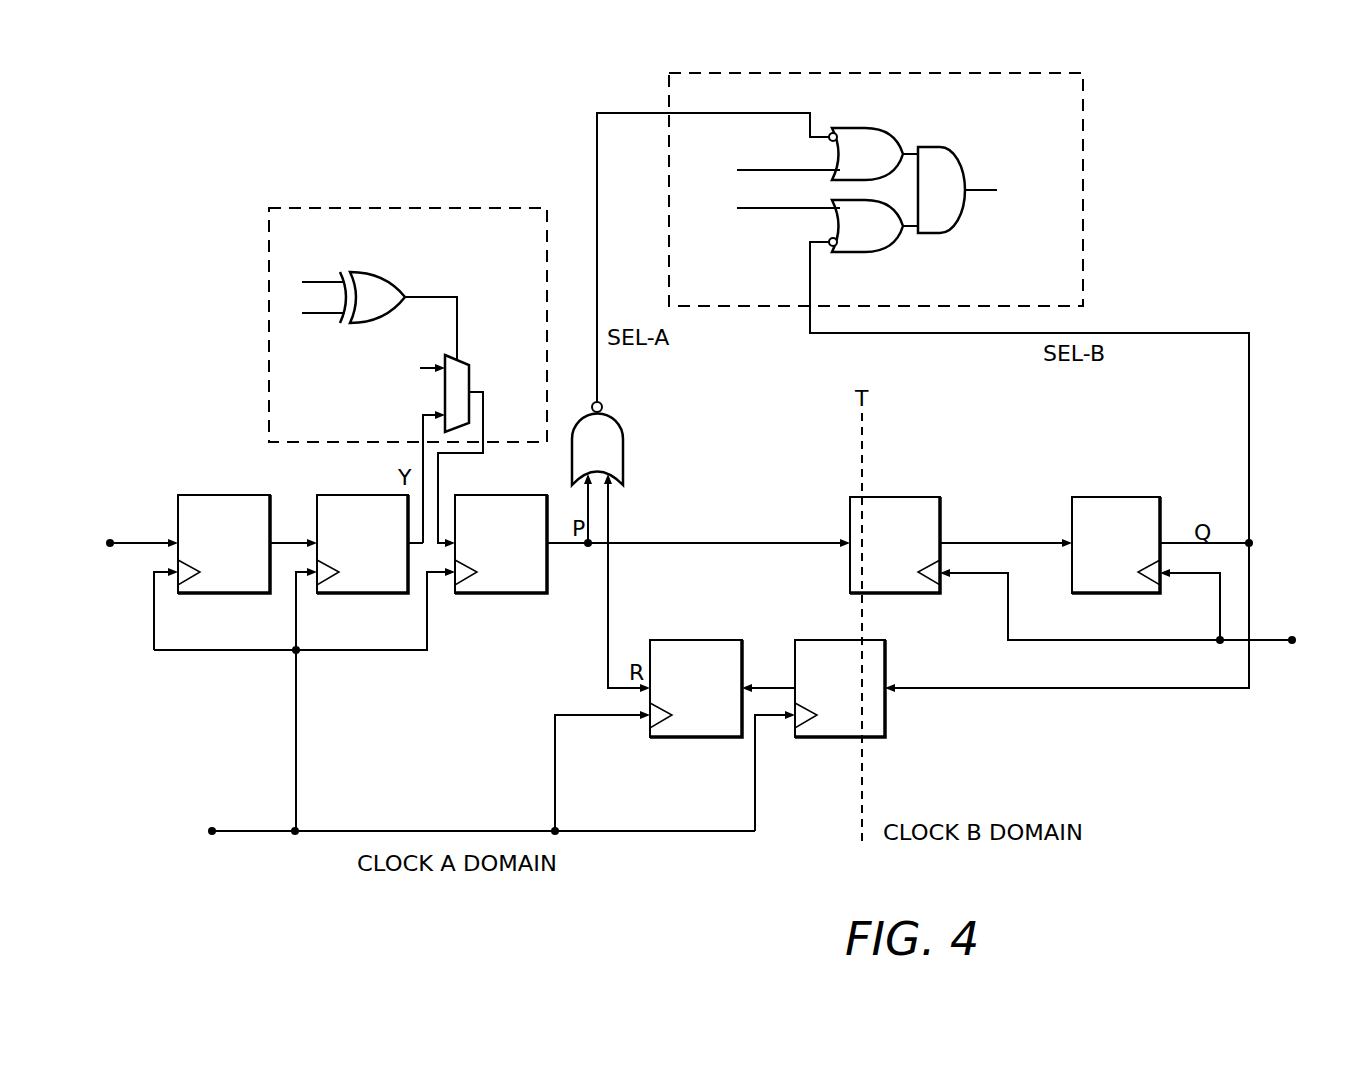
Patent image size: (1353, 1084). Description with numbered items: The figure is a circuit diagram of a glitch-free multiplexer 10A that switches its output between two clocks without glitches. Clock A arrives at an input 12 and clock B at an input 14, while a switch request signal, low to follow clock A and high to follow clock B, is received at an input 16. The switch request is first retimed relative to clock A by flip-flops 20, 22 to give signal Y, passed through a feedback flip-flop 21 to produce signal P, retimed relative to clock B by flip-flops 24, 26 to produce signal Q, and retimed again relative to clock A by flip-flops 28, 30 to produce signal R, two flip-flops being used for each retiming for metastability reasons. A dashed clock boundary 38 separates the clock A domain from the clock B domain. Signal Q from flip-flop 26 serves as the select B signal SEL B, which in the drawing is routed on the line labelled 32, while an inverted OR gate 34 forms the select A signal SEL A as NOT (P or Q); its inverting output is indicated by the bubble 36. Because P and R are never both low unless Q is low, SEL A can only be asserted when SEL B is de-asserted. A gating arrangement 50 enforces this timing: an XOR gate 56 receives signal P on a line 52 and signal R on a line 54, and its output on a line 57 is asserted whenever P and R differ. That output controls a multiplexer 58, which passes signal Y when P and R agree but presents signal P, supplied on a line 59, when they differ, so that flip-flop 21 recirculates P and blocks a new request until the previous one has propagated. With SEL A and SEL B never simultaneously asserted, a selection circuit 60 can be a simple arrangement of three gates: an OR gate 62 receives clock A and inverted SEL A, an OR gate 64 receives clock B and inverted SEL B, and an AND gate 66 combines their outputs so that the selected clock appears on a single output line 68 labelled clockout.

The glitch-free multiplexer 10A is at (244, 265).
The input for clock A 12 is at (212, 831).
The input for clock B 14 is at (1292, 640).
The switch request input 16 is at (110, 543).
The flip-flop 20 is at (205, 495).
The feedback flip-flop 21 is at (522, 593).
The flip-flop 22 is at (383, 593).
The flip-flop 24 is at (915, 497).
The flip-flop 26 is at (1120, 497).
The flip-flop 28 is at (820, 737).
The flip-flop 30 is at (693, 737).
The select B signal line 32 is at (1249, 385).
The inverted OR gate 34 is at (623, 448).
The inverting output 36 is at (597, 385).
The clock boundary 38 is at (862, 780).
The gating arrangement 50 is at (269, 400).
The line 52 is at (327, 282).
The line 54 is at (327, 313).
The XOR gate 56 is at (375, 272).
The line 57 is at (457, 312).
The multiplexer 58 is at (469, 372).
The line 59 is at (432, 368).
The selection circuit 60 is at (1083, 78).
The OR gate 62 is at (885, 128).
The OR gate 64 is at (885, 252).
The AND gate 66 is at (955, 147).
The output line 68 is at (985, 193).